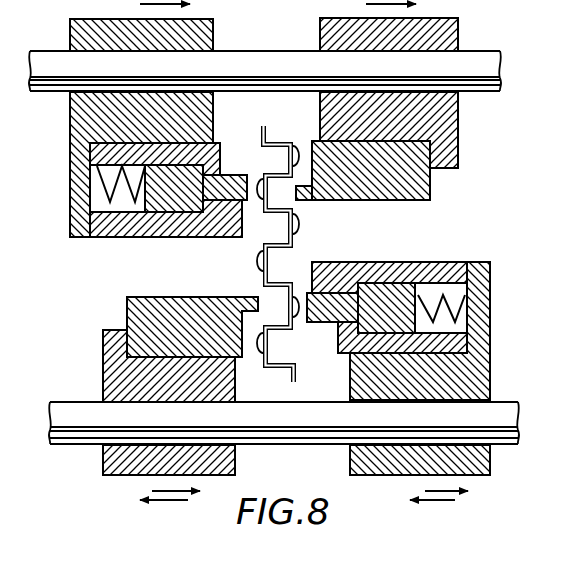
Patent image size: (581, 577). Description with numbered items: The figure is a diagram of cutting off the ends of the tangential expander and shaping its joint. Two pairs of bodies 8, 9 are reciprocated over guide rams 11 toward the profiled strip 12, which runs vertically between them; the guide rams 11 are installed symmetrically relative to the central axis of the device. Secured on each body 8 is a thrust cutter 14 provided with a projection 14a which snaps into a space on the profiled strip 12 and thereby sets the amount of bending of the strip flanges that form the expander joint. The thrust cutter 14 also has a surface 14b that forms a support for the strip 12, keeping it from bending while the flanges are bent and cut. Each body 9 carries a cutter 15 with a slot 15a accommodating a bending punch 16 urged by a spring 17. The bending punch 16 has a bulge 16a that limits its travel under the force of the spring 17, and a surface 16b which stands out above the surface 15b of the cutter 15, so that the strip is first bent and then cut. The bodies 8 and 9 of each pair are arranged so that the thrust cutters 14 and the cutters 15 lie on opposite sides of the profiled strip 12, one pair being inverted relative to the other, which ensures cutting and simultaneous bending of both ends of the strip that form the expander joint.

The body 8 is at (457, 43).
The body 9 is at (76, 30).
The guide ram 11 is at (484, 72).
The profiled strip 12 is at (270, 141).
The thrust cutter 14 is at (436, 176).
The projection 14a is at (302, 202).
The surface 14b is at (311, 182).
The cutter 15 is at (100, 232).
The slot 15a is at (105, 201).
The surface 15b is at (243, 230).
The bending punch 16 is at (227, 181).
The bulge 16a is at (168, 205).
The surface 16b is at (249, 190).
The spring 17 is at (95, 175).